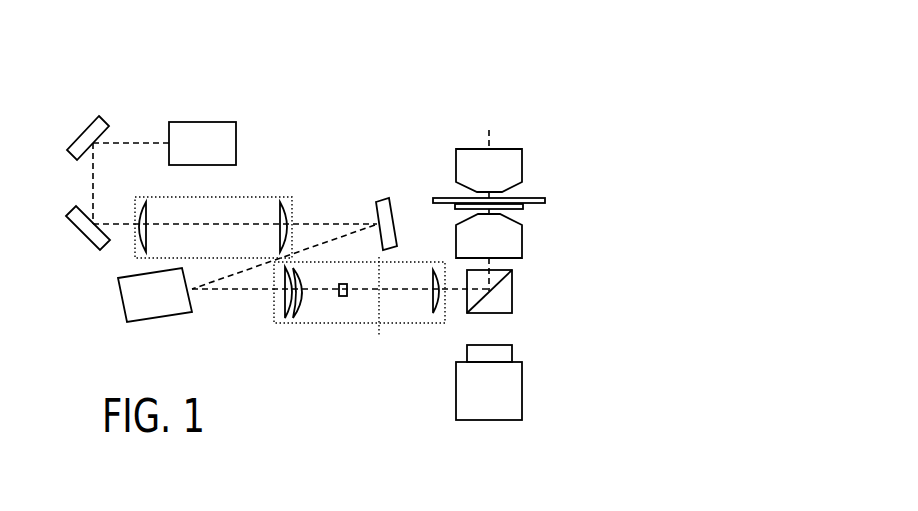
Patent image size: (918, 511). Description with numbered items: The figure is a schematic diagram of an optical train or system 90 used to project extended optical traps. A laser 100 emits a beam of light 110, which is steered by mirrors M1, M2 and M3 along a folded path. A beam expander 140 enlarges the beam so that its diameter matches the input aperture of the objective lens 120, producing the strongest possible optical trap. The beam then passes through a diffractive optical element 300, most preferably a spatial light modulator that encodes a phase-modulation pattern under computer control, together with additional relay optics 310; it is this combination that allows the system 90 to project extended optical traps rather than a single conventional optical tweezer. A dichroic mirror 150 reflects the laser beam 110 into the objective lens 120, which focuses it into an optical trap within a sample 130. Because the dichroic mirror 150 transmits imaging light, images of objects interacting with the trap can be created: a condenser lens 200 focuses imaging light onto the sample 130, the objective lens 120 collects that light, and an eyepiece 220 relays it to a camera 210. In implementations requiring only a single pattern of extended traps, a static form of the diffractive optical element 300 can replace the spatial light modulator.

The optical train or system 90 is at (417, 58).
The laser 100 is at (218, 128).
The beam of light 110 is at (123, 130).
The first mirror M1 is at (73, 138).
The second mirror M2 is at (74, 228).
The third mirror M3 is at (386, 208).
The beam expander 140 is at (253, 187).
The diffractive optical element (DOE) 300 is at (155, 305).
The relay optics 310 is at (408, 336).
The condenser lens 200 is at (512, 173).
The sample 130 is at (530, 205).
The objective lens 120 is at (512, 238).
The dichroic mirror 150 is at (502, 292).
The eyepiece 220 is at (497, 353).
The camera 210 is at (488, 413).